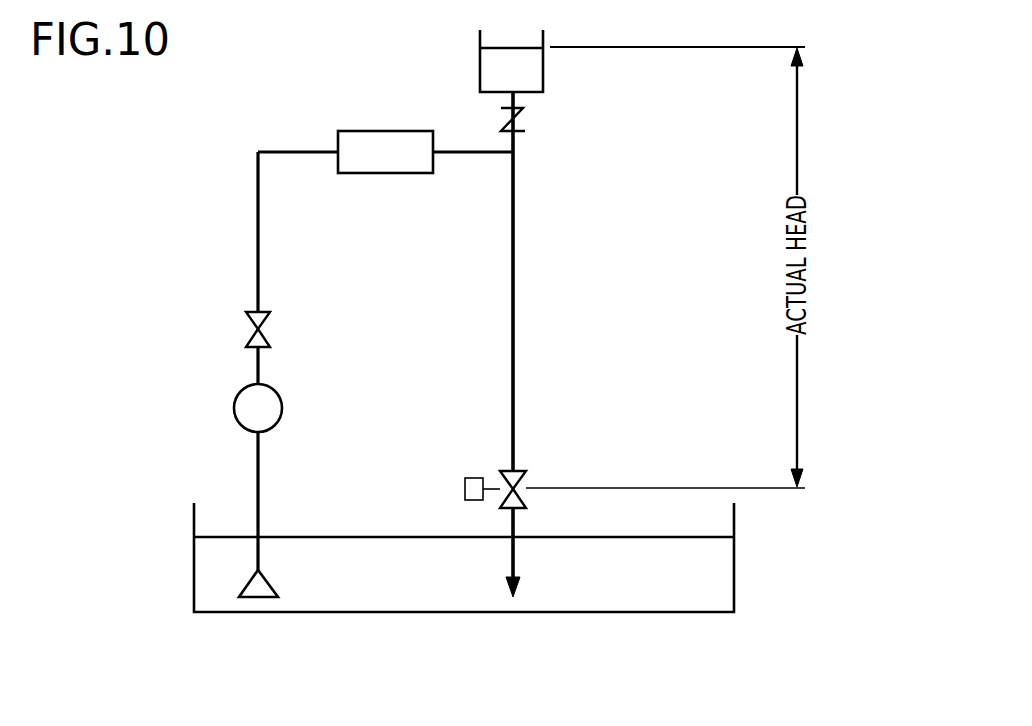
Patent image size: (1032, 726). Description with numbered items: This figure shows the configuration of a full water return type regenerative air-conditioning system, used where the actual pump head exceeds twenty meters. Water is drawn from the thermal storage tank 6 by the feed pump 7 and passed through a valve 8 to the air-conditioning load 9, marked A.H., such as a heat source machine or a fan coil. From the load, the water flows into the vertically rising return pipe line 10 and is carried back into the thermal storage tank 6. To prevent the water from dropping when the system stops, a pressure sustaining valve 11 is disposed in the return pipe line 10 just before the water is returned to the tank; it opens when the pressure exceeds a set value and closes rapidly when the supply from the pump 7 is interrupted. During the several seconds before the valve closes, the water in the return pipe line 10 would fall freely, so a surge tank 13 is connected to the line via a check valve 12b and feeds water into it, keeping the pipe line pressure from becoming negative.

The thermal storage tank 6 is at (324, 535).
The pump 7 is at (282, 408).
The valve 8 is at (270, 322).
The air-conditioning load 9 is at (388, 173).
The return pipe line 10 is at (515, 300).
The pressure sustaining valve 11 is at (465, 489).
The check valve 12b is at (522, 118).
The surge tank 13 is at (480, 42).